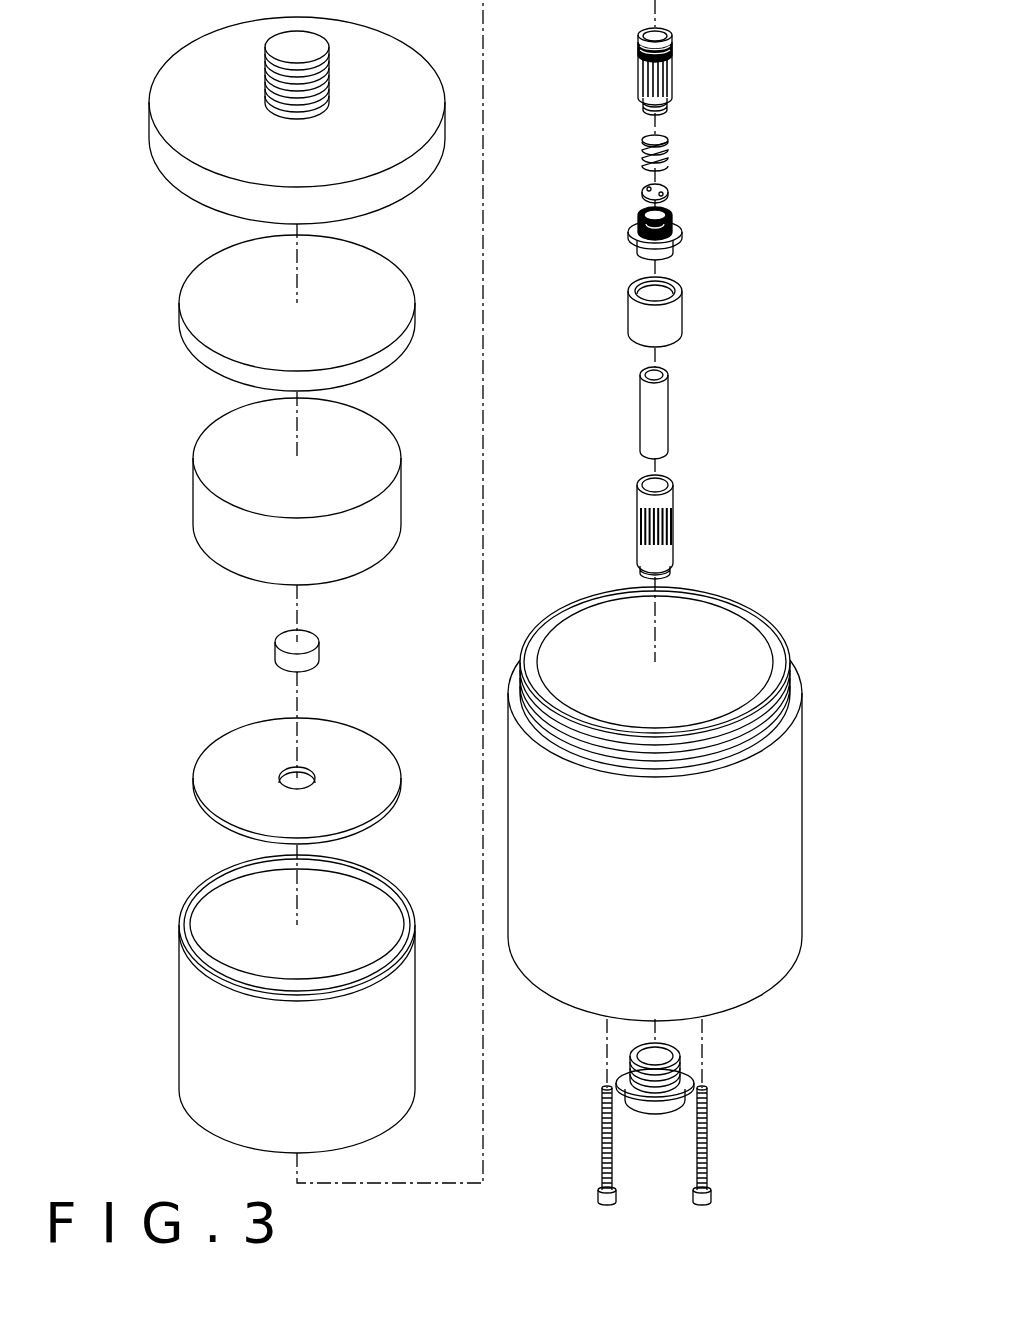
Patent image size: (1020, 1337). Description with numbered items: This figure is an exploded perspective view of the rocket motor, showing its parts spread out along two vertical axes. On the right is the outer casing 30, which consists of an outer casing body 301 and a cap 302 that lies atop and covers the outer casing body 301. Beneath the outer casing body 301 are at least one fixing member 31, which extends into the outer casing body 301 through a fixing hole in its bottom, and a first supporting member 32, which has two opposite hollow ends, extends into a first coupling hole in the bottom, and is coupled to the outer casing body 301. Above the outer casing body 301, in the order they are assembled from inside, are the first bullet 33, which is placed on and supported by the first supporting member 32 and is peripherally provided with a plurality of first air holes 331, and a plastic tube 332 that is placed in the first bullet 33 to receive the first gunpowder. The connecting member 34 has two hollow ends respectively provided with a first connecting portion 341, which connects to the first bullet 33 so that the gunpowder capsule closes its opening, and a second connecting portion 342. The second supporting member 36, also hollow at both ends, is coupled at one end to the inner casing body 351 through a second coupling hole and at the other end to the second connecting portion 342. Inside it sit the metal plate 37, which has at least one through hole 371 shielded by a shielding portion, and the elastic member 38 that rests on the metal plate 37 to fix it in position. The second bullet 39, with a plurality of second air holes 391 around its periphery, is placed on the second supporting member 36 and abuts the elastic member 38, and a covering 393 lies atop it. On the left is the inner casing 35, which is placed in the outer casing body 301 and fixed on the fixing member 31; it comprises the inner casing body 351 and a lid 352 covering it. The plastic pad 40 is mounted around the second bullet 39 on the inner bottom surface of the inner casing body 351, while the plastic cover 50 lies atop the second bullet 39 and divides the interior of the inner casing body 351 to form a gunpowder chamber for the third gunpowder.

The outer casing 30 is at (699, 804).
The outer casing body 301 is at (788, 763).
The cap 302 is at (168, 92).
The fixing member 31 is at (600, 1138).
The first supporting member 32 is at (658, 1107).
The first bullet 33 is at (684, 525).
The first air holes 331 is at (670, 527).
The plastic tube 332 is at (662, 415).
The connecting member 34 is at (689, 316).
The first connecting portion 341 is at (675, 343).
The second connecting portion 342 is at (677, 283).
The inner casing 35 is at (251, 1016).
The inner casing body 351 is at (228, 1113).
The lid 352 is at (182, 335).
The second supporting member 36 is at (678, 229).
The metal plate 37 is at (695, 192).
The through hole 371 is at (663, 195).
The elastic member 38 is at (670, 152).
The second bullet 39 is at (689, 69).
The second air holes 391 is at (668, 72).
The covering 393 is at (275, 657).
The plastic pad 40 is at (342, 740).
The plastic cover 50 is at (197, 493).